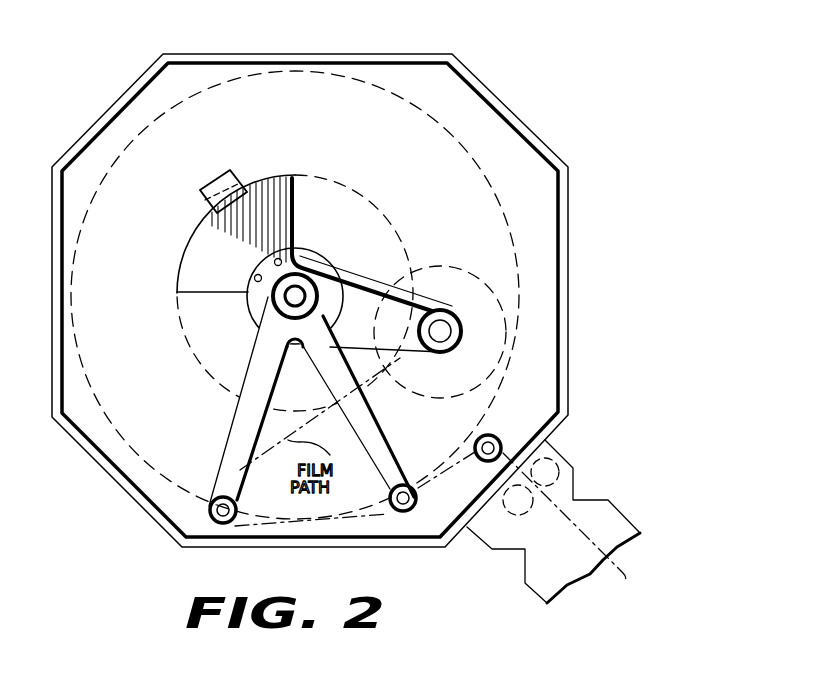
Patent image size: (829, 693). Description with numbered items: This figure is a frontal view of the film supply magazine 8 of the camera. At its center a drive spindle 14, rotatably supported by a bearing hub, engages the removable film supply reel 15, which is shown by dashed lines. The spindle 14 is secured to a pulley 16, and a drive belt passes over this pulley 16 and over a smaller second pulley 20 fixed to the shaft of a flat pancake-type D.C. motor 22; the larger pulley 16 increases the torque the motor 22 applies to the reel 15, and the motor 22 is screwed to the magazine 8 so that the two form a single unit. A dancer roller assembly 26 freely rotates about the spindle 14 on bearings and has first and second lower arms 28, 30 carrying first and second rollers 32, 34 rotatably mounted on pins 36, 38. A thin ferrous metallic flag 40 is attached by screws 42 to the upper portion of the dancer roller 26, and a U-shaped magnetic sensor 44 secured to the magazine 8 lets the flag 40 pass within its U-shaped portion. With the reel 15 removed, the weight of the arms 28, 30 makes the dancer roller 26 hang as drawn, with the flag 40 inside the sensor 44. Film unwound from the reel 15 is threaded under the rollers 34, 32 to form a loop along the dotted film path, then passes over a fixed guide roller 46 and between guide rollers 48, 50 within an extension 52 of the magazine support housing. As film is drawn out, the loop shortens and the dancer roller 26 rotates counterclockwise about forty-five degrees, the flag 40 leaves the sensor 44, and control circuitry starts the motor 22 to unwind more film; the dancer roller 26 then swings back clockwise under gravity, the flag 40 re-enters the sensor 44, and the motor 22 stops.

The film supply magazine 8 is at (518, 118).
The drive spindle 14 is at (295, 296).
The film supply reel 15 is at (180, 346).
The pulley 16 is at (337, 303).
The second pulley 20 is at (455, 320).
The D.C. motor 22 is at (432, 268).
The dancer roller assembly 26 is at (295, 350).
The first lower arm 28 is at (372, 418).
The second lower arm 30 is at (243, 434).
The first roller 32 is at (397, 463).
The second roller 34 is at (248, 482).
The pin 36 is at (386, 500).
The pin 38 is at (207, 510).
The metallic flag 40 is at (283, 208).
The screws 42 is at (259, 272).
The U-shaped sensor 44 is at (240, 178).
The fixed guide roller 46 is at (490, 433).
The guide roller 48 is at (523, 516).
The guide roller 50 is at (557, 462).
The extension 52 is at (623, 512).